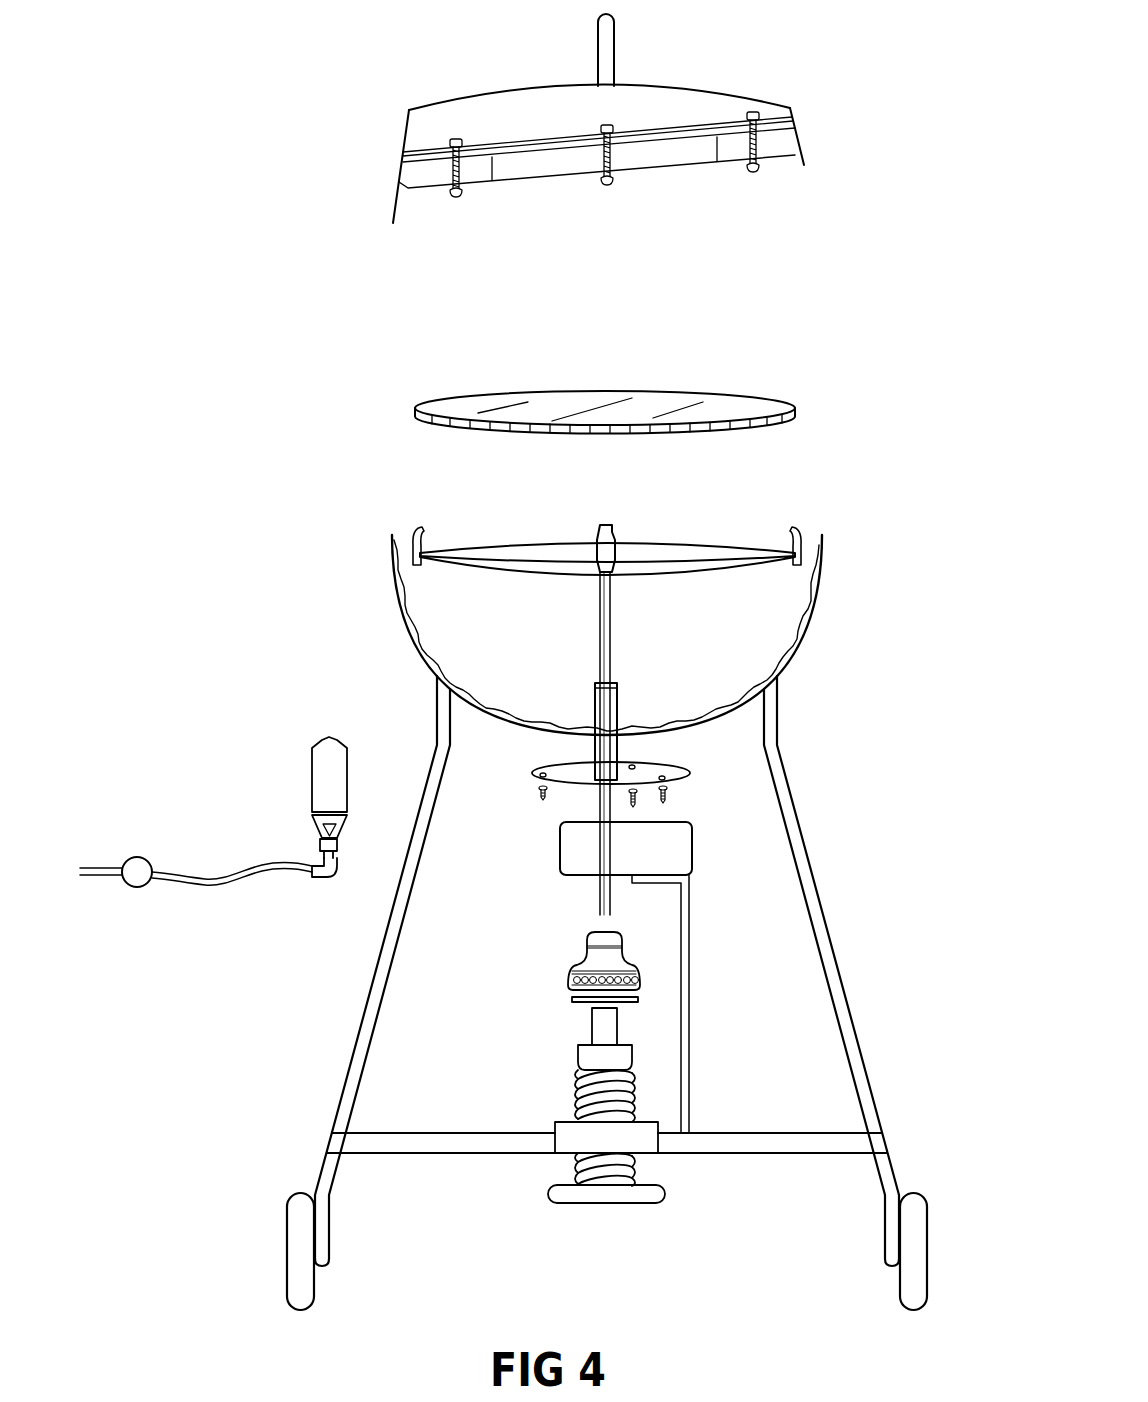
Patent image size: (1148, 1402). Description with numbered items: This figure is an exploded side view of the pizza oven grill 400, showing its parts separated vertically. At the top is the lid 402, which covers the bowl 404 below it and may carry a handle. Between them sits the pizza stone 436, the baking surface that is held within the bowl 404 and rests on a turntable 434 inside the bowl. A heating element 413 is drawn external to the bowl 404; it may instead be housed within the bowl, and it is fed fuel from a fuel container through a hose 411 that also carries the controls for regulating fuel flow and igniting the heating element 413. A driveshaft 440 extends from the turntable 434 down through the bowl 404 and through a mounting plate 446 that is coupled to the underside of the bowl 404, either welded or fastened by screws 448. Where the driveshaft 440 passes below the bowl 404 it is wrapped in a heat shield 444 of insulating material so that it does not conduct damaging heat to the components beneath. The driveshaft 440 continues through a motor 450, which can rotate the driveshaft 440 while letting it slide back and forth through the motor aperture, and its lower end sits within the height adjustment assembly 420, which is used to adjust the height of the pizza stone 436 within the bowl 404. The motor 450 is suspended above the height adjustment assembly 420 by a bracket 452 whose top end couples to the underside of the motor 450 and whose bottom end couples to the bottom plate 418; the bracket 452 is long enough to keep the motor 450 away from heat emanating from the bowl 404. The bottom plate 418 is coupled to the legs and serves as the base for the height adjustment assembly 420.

The pizza oven grill 400 is at (243, 221).
The lid 402 is at (800, 122).
The bowl 404 is at (826, 548).
The hose 411 is at (138, 885).
The heating element 413 is at (328, 780).
The bottom plate 418 is at (434, 1147).
The height adjustment assembly 420 is at (538, 933).
The turntable 434 is at (507, 577).
The pizza stone 436 is at (797, 412).
The driveshaft 440 is at (600, 890).
The heat shield 444 is at (612, 717).
The mounting plate 446 is at (532, 772).
The screws 448 is at (667, 800).
The motor 450 is at (567, 832).
The bracket 452 is at (683, 1000).